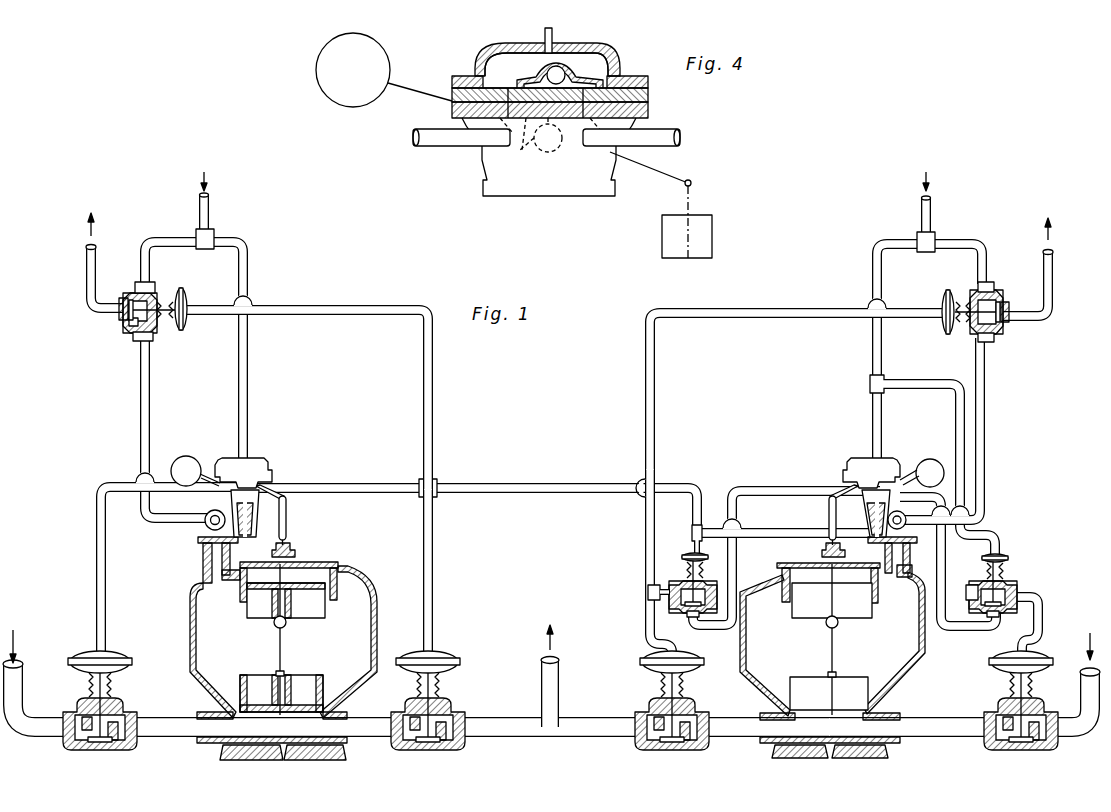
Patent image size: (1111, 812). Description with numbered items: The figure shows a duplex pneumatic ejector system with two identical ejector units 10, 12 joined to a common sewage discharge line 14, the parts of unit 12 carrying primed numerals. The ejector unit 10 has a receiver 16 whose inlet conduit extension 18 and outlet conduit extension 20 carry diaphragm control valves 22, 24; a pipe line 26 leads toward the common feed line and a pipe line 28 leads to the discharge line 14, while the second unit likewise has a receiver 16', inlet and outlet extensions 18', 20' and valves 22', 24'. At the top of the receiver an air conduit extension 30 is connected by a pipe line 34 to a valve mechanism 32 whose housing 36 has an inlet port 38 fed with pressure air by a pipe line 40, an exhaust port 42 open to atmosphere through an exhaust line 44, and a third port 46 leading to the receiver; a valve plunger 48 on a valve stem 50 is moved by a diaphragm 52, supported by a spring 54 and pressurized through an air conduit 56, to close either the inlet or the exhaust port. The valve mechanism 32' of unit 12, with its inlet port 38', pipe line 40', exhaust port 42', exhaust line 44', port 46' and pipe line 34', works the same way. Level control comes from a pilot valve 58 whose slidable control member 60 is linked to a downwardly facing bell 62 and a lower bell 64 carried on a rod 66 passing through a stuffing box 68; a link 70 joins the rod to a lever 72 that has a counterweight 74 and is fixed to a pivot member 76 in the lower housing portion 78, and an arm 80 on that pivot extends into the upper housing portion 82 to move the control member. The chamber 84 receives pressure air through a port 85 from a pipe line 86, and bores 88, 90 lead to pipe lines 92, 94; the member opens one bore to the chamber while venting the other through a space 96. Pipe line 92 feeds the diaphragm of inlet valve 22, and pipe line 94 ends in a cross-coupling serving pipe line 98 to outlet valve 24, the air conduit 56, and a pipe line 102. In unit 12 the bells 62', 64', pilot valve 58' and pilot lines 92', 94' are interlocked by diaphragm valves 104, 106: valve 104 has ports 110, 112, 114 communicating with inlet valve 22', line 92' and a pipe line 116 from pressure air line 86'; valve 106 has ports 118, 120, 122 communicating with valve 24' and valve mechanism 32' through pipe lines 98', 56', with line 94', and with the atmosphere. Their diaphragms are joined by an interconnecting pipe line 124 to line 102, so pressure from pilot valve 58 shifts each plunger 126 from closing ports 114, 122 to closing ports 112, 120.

In FIG. 1, the ejector unit 10 is at (332, 640).
In FIG. 1, the ejector unit 12 is at (874, 652).
In FIG. 1, the common sewage discharge line 14 is at (558, 672).
In FIG. 1, the receiver 16 is at (289, 657).
In FIG. 1, the receiver 16' is at (820, 660).
In FIG. 1, the inlet conduit extension 18 is at (199, 706).
In FIG. 1, the inlet conduit extension 18' is at (907, 705).
In FIG. 1, the outlet conduit extension 20 is at (330, 705).
In FIG. 1, the outlet conduit extension 20' is at (768, 749).
In FIG. 1, the diaphragm control valve 22 is at (105, 681).
In FIG. 1, the diaphragm control valve 22' is at (1025, 692).
In FIG. 1, the diaphragm control valve 24 is at (437, 687).
In FIG. 1, the diaphragm control valve 24' is at (659, 695).
In FIG. 1, the pipe line 26 is at (22, 688).
In FIG. 1, the pipe line 28 is at (484, 716).
In FIG. 1, the air conduit extension 30 is at (202, 556).
In FIG. 1, the valve mechanism 32 is at (211, 331).
In FIG. 1, the valve mechanism 32' is at (949, 304).
In FIG. 1, the pipe line 34 is at (179, 427).
In FIG. 1, the pipe line 34' is at (965, 428).
In FIG. 1, the housing 36 is at (124, 320).
In FIG. 1, the inlet port 38 is at (156, 269).
In FIG. 1, the inlet port 38' is at (997, 294).
In FIG. 1, the pipe line 40 is at (191, 236).
In FIG. 1, the pipe line 40' is at (932, 236).
In FIG. 1, the exhaust port 42 is at (115, 295).
In FIG. 1, the exhaust port 42' is at (1016, 300).
In FIG. 1, the exhaust line 44 is at (85, 260).
In FIG. 1, the exhaust line 44' is at (1045, 267).
In FIG. 1, the third port 46 is at (155, 351).
In FIG. 1, the third port 46' is at (1002, 341).
In FIG. 1, the valve plunger 48 is at (135, 327).
In FIG. 1, the valve stem 50 is at (162, 300).
In FIG. 1, the diaphragm 52 is at (188, 299).
In FIG. 1, the spring 54 is at (165, 320).
In FIG. 1, the air conduit 56 is at (307, 385).
In FIG. 1, the pipe line 56' is at (796, 375).
In FIG. 4, the pilot valve 58 is at (533, 166).
In FIG. 1, the pilot valve 58 is at (256, 483).
In FIG. 1, the pilot valve 58' is at (865, 483).
In FIG. 4, the slidable control member 60 is at (540, 74).
In FIG. 4, the bell 62 is at (677, 205).
In FIG. 1, the bell 62 is at (303, 603).
In FIG. 1, the bell 62' is at (852, 603).
In FIG. 4, the bell 64 is at (644, 252).
In FIG. 1, the bell 64 is at (265, 681).
In FIG. 1, the bell 64' is at (818, 680).
In FIG. 1, the rod 66 is at (278, 645).
In FIG. 1, the stuffing box 68 is at (296, 552).
In FIG. 1, the link 70 is at (290, 515).
In FIG. 4, the lever 72 is at (418, 92).
In FIG. 1, the lever 72 is at (210, 474).
In FIG. 4, the counterweight 74 is at (353, 107).
In FIG. 1, the counterweight 74 is at (185, 456).
In FIG. 4, the pivot member 76 is at (560, 150).
In FIG. 4, the lower housing portion 78 is at (486, 162).
In FIG. 4, the arm 80 is at (566, 72).
In FIG. 4, the upper housing portion 82 is at (617, 60).
In FIG. 4, the chamber 84 is at (480, 62).
In FIG. 4, the port 85 is at (553, 36).
In FIG. 4, the pipe line 86 is at (526, 32).
In FIG. 1, the pipe line 86 is at (261, 379).
In FIG. 1, the pressure air pipe line 86' is at (860, 379).
In FIG. 4, the bore 88 is at (522, 130).
In FIG. 4, the bore 90 is at (586, 120).
In FIG. 4, the pipe line 92 is at (459, 152).
In FIG. 1, the pipe line 92 is at (176, 562).
In FIG. 1, the pilot line 92' is at (947, 577).
In FIG. 4, the pipe line 94 is at (631, 146).
In FIG. 1, the pipe line 94 is at (338, 472).
In FIG. 1, the pilot line 94' is at (787, 543).
In FIG. 4, the space 96 is at (520, 82).
In FIG. 1, the pipe line 98 is at (448, 571).
In FIG. 1, the pipe line 98' is at (638, 561).
In FIG. 1, the pipe line 102 is at (501, 485).
In FIG. 1, the interlocking valve 104 is at (1010, 554).
In FIG. 1, the interlocking valve 106 is at (686, 549).
In FIG. 1, the port 110 is at (1014, 590).
In FIG. 1, the port 112 is at (997, 621).
In FIG. 1, the port 114 is at (972, 596).
In FIG. 1, the pipe line 116 is at (955, 428).
In FIG. 1, the port 118 is at (661, 578).
In FIG. 1, the port 120 is at (687, 616).
In FIG. 1, the port 122 is at (714, 590).
In FIG. 1, the interconnecting pipe line 124 is at (804, 532).
In FIG. 1, the valve plunger 126 is at (705, 612).